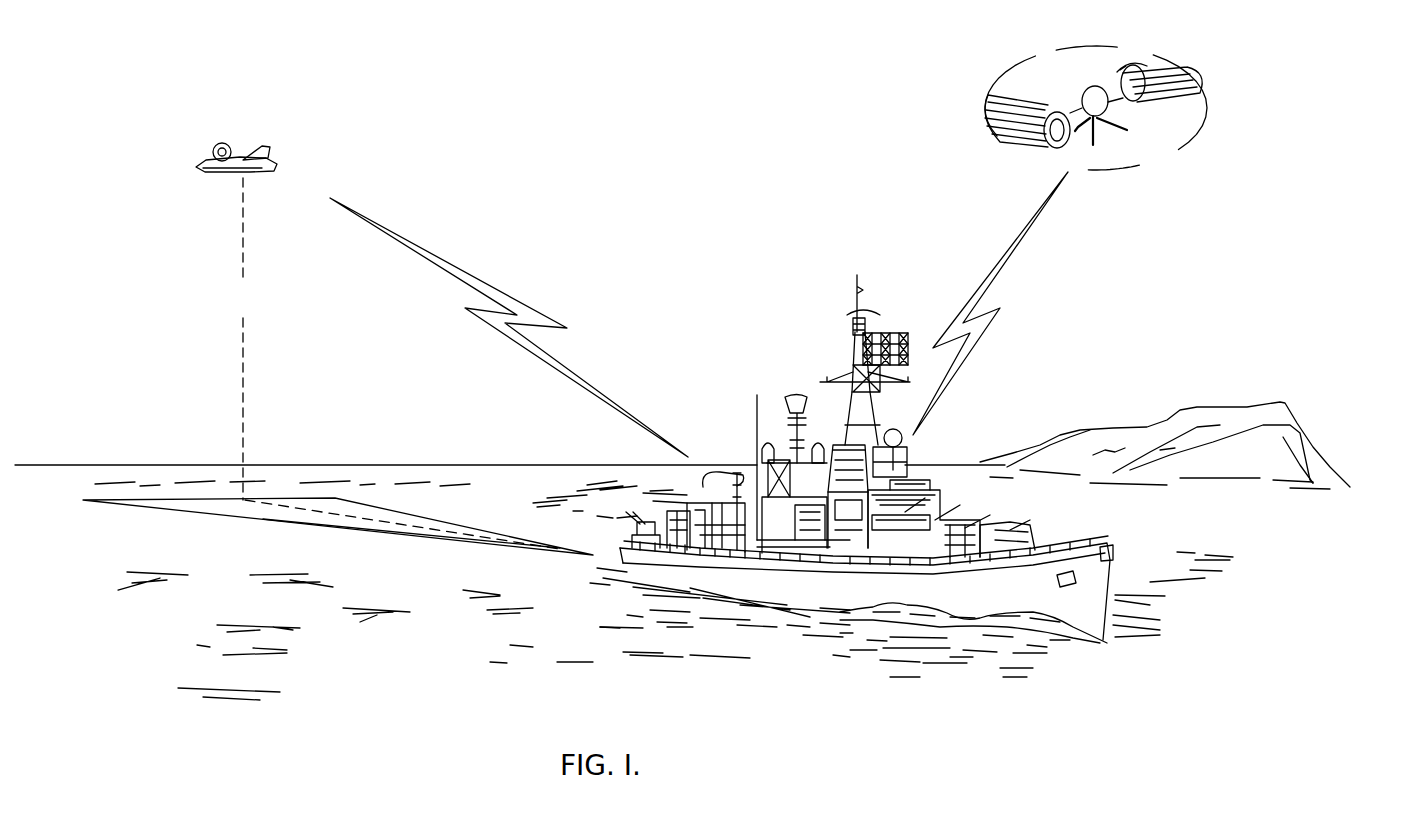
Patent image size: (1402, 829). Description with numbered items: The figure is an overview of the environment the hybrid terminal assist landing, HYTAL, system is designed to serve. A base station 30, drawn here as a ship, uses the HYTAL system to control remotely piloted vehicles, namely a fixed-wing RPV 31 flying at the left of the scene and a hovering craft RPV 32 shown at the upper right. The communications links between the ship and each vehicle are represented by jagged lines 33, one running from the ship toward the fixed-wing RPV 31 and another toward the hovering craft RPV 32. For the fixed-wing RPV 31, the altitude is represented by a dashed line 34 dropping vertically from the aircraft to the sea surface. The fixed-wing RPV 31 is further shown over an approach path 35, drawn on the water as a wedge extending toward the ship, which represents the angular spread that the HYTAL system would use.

The base station 30 is at (814, 657).
The fixed-wing RPV 31 is at (236, 142).
The hovering craft RPV 32 is at (1096, 103).
The jagged lines 33 is at (699, 314).
The dashed line 34 is at (226, 339).
The approach path 35 is at (438, 518).